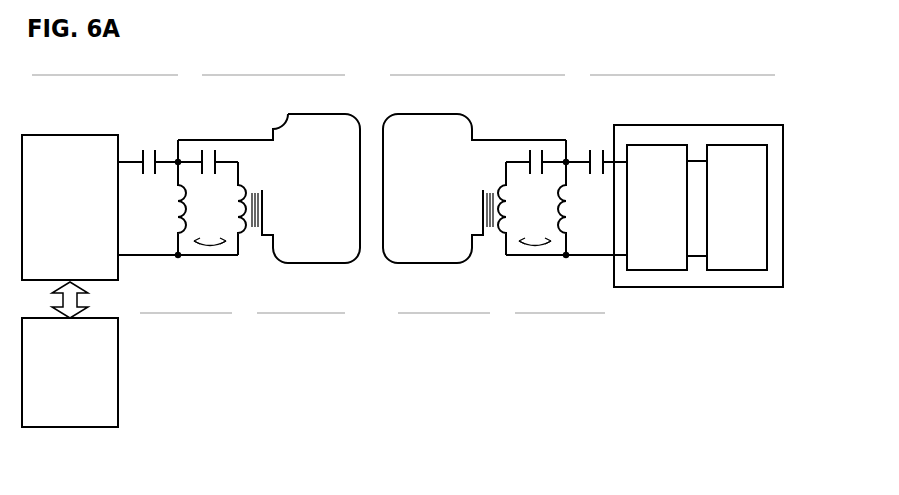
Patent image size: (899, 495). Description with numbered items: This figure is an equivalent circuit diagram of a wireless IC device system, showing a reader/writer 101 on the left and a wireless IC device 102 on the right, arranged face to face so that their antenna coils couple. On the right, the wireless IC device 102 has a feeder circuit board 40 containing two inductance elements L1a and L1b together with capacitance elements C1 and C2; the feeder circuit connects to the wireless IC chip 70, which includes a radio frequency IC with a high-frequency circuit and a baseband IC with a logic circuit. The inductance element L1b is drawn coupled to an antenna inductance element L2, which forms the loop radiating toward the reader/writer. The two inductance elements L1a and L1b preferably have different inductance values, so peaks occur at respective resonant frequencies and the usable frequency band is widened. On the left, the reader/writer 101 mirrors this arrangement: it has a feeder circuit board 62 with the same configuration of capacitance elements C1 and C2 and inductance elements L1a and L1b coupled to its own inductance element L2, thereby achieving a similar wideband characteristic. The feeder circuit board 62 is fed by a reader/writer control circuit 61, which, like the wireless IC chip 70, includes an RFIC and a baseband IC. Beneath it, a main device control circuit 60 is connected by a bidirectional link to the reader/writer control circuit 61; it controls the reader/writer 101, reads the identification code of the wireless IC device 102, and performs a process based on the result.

The reader/writer 101 is at (189, 70).
The wireless IC device 102 is at (581, 70).
The reader/writer control circuit 61 is at (70, 134).
The main device control circuit 60 is at (118, 372).
The wireless IC chip 70 is at (693, 125).
The feeder circuit board 62 is at (242, 318).
The feeder circuit board 40 is at (504, 318).
The capacitance element C1 is at (372, 151).
The capacitance element C2 is at (372, 159).
The inductance element L1a is at (371, 199).
The inductance element L1b is at (372, 208).
The inductance element L2 is at (414, 188).